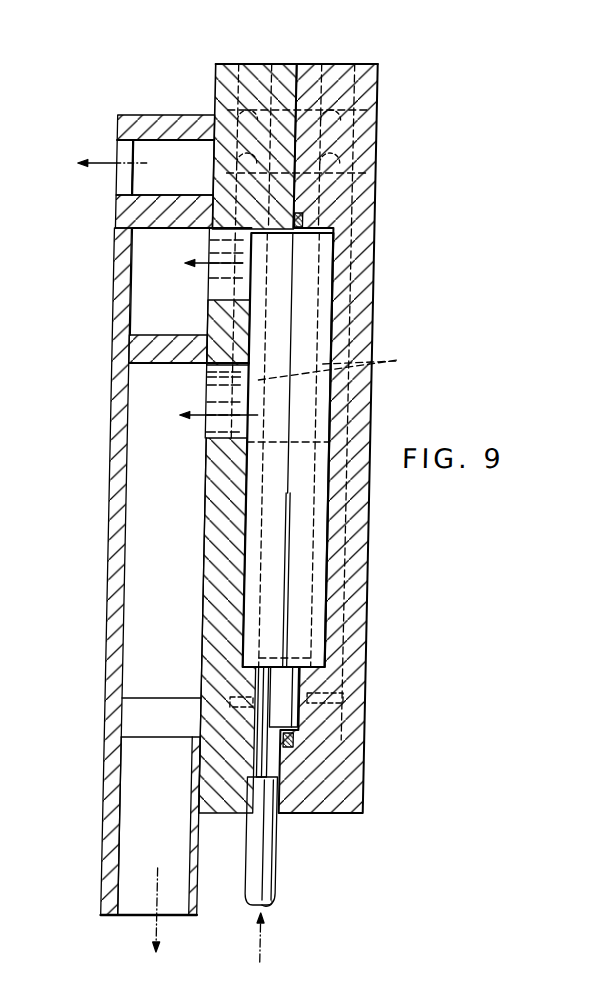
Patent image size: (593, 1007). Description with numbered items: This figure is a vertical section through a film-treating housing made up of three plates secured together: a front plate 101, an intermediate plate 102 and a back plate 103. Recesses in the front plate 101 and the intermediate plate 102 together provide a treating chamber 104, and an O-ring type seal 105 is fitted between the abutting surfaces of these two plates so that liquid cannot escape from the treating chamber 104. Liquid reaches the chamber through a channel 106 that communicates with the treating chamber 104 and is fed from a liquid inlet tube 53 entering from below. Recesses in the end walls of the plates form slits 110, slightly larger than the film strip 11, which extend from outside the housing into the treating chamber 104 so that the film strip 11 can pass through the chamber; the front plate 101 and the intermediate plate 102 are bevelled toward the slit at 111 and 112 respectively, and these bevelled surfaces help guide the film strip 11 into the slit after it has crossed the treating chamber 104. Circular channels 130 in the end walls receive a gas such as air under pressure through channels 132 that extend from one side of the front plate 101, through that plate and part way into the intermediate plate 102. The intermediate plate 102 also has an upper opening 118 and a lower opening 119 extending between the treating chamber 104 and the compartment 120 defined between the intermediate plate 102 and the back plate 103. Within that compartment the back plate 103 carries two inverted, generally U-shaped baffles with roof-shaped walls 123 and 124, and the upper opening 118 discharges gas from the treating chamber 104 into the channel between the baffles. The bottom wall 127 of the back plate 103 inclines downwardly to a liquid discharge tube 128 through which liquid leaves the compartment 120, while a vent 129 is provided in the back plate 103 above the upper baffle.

The front plate 101 is at (380, 87).
The intermediate plate 102 is at (227, 64).
The back plate 103 is at (160, 123).
The treating chamber 104 is at (313, 312).
The O-ring type seal 105 is at (308, 743).
The channel 106 is at (280, 765).
The slits 110 is at (298, 528).
The bevelled surface of front plate 111 is at (311, 553).
The bevelled surface of intermediate plate 112 is at (281, 558).
The upper opening 118 is at (228, 253).
The lower opening 119 is at (228, 394).
The compartment 120 is at (163, 283).
The roof-shaped wall 123 is at (188, 340).
The roof-shaped wall 124 is at (191, 200).
The bottom wall 127 is at (177, 705).
The liquid discharge tube 128 is at (129, 830).
The vent 129 is at (150, 178).
The circular channels 130 is at (344, 365).
The channels 132 is at (450, 145).
The liquid inlet tube 53 is at (282, 858).
The film strip 11 is at (205, 573).